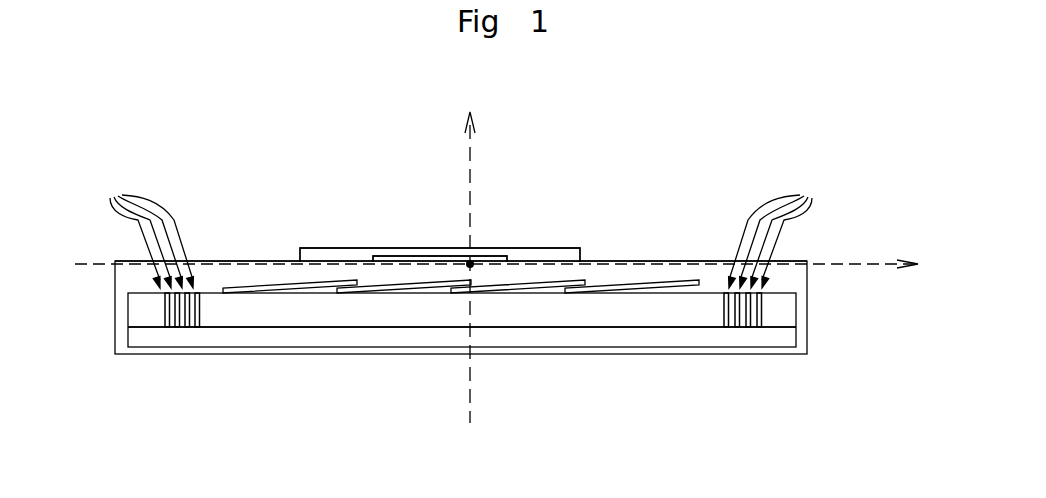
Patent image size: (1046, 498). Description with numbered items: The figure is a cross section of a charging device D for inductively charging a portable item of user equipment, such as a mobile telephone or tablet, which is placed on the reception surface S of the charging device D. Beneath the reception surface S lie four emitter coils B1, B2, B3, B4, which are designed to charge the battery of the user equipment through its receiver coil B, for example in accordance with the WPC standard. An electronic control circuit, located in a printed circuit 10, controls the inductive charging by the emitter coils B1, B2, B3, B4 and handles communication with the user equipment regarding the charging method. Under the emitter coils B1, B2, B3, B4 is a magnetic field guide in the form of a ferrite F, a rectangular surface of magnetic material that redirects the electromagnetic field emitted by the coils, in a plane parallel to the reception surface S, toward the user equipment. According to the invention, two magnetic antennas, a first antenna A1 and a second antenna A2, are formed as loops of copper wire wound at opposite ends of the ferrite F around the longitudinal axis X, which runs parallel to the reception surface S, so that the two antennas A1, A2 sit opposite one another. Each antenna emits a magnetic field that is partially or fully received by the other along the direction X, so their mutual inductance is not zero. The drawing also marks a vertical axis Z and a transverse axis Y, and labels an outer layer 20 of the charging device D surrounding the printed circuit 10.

The first antenna A1 is at (144, 228).
The second antenna A2 is at (779, 229).
The reception surface S is at (238, 262).
The receiver coil B is at (497, 258).
The Y axis Y is at (466, 261).
The longitudinal direction X is at (496, 247).
The Z axis Z is at (460, 264).
The charging device D is at (775, 150).
The cover layer 20 is at (808, 283).
The printed circuit 10 is at (787, 338).
The ferrite F is at (145, 312).
The emitter coil B1 is at (268, 289).
The emitter coil B2 is at (379, 289).
The emitter coil B3 is at (492, 289).
The emitter coil B4 is at (612, 289).